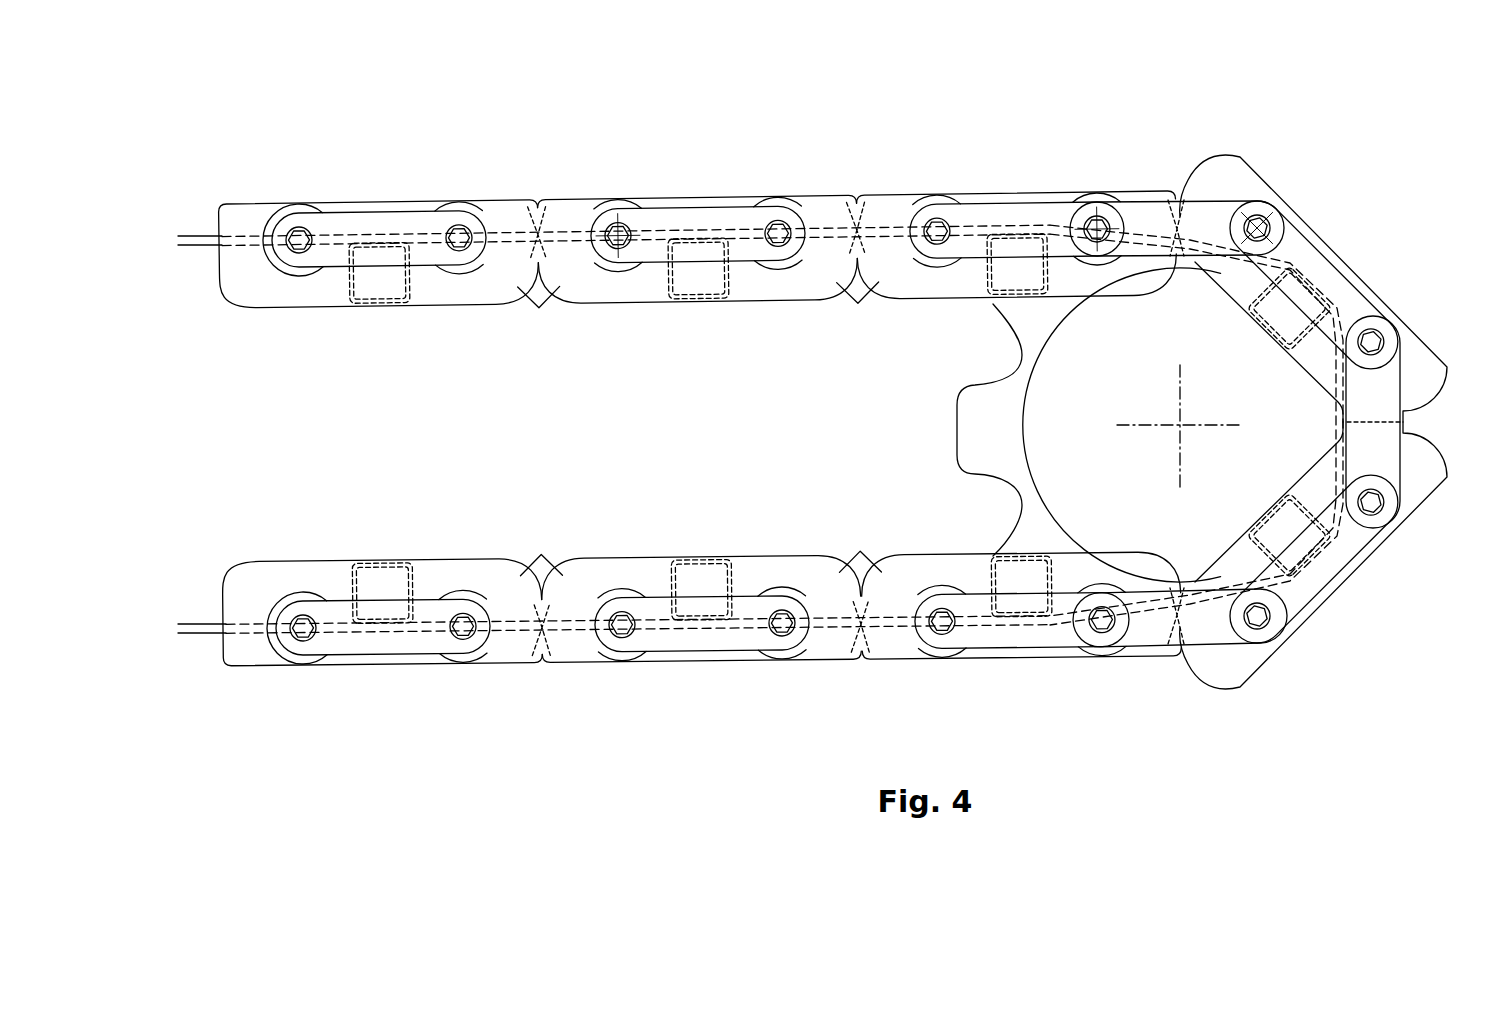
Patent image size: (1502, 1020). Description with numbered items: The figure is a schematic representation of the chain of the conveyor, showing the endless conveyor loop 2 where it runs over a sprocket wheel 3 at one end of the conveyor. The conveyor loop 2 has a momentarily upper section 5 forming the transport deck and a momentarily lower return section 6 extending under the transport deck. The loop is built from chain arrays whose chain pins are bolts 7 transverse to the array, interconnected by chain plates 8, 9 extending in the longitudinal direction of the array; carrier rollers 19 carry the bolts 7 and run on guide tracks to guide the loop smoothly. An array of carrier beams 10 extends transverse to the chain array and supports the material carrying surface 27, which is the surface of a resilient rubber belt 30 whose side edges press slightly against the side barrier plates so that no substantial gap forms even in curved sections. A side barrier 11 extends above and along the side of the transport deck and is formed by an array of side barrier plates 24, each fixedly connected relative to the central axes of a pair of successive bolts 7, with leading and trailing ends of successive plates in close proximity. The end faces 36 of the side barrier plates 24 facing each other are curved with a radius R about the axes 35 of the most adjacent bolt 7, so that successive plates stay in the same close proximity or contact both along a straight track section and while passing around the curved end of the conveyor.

The conveyor loop 2 is at (823, 434).
The sprocket wheel 3 is at (945, 433).
The upper section 5 is at (517, 233).
The lower return section 6 is at (453, 677).
The bolt 7 is at (1270, 228).
The chain plate 8 is at (1372, 440).
The chain plate 9 is at (1330, 572).
The carrier beam 10 is at (840, 429).
The side barrier 11 is at (832, 198).
The carrier roller 19 is at (790, 205).
The side barrier plate 24 is at (818, 580).
The material carrying surface 27 is at (203, 234).
The rubber belt 30 is at (193, 722).
The axis 35 is at (587, 264).
The end face 36 is at (1260, 224).
The radius R is at (1193, 217).